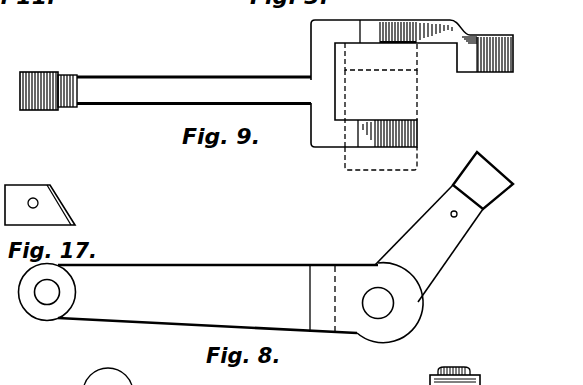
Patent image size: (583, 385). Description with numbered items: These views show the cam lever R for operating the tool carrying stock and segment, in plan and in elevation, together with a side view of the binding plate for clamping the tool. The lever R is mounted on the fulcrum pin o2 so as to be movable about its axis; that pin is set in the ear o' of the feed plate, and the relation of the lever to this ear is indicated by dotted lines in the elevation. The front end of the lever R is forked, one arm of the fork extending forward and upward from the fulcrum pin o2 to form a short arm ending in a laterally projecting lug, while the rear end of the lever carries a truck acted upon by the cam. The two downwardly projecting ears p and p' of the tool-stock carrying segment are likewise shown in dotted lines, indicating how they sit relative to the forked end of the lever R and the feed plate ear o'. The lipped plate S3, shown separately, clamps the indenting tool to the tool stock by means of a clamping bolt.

In FIG. 9, the lever R is at (165, 85).
In FIG. 8, the lever R is at (221, 303).
In FIG. 9, the fulcrum pin o2 is at (485, 54).
In FIG. 8, the fulcrum pin o2 is at (444, 227).
In FIG. 9, the downwardly projecting ear p' is at (381, 56).
In FIG. 9, the ear of the feed plate o' is at (381, 108).
In FIG. 9, the downwardly projecting ear p is at (381, 158).
In FIG. 17, the lipped plate S3 is at (40, 194).